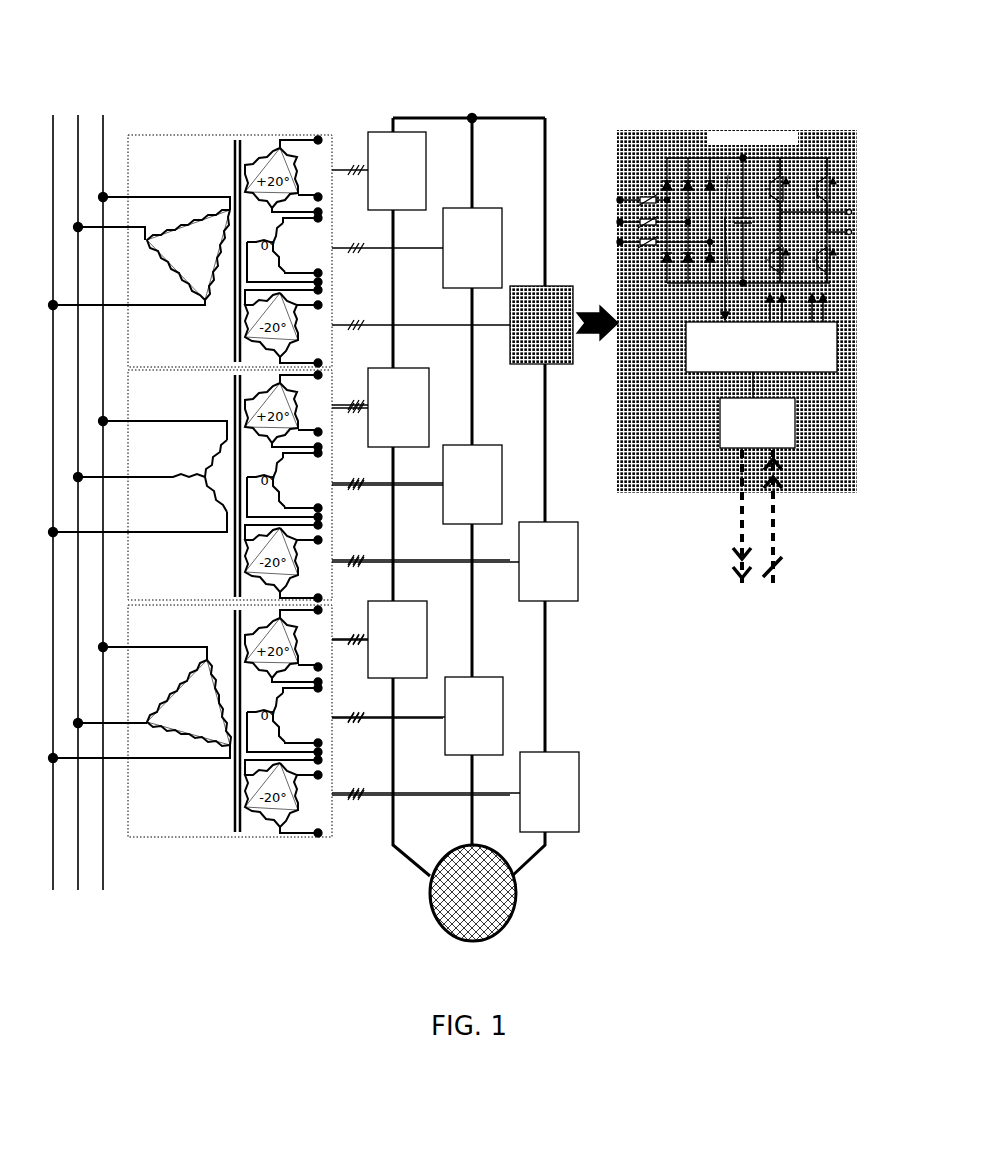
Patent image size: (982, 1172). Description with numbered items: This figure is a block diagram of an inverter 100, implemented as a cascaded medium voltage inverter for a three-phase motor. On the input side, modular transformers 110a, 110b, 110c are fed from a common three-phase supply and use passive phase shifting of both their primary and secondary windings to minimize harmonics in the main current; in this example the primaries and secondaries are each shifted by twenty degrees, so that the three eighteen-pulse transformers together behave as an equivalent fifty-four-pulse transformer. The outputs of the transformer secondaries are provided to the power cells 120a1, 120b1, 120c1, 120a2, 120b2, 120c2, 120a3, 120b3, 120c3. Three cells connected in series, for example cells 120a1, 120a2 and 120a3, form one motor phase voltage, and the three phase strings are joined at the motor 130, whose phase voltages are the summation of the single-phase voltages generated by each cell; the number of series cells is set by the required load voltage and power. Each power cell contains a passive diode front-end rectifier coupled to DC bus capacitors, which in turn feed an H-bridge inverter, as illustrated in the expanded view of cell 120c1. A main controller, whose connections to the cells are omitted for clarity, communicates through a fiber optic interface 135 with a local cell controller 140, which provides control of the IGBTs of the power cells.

The inverter 100 is at (72, 36).
The modular transformer 110a is at (280, 251).
The modular transformer 110b is at (280, 486).
The modular transformer 110c is at (280, 721).
The power cell 120a1 is at (388, 129).
The power cell 120b1 is at (481, 208).
The power cell 120c1 is at (553, 286).
The power cell 120a2 is at (405, 368).
The power cell 120b2 is at (483, 445).
The power cell 120c2 is at (553, 522).
The power cell 120a3 is at (405, 601).
The power cell 120b3 is at (483, 677).
The power cell 120c3 is at (558, 752).
The motor 130 is at (510, 918).
The fiber optic interface 135 is at (720, 431).
The local cell controller 140 is at (686, 356).